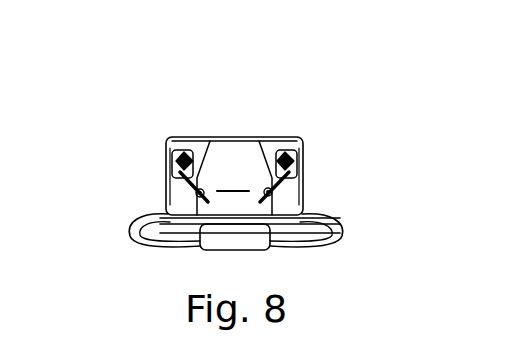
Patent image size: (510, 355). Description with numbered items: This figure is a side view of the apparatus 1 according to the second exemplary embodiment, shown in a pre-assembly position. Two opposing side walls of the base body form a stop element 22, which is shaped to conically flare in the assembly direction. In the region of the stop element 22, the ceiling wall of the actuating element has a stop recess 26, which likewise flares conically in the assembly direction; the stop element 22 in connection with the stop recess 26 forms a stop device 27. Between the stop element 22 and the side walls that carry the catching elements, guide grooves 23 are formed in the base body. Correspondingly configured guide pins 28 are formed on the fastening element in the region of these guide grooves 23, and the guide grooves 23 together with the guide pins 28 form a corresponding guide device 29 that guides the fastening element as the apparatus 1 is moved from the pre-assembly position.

The apparatus 1 is at (344, 100).
The stop element 22 is at (233, 177).
The guide grooves 23 is at (208, 202).
The stop recess 26 is at (236, 138).
The stop device 27 is at (219, 113).
The guide pins 28 is at (173, 171).
The guide device 29 is at (138, 195).